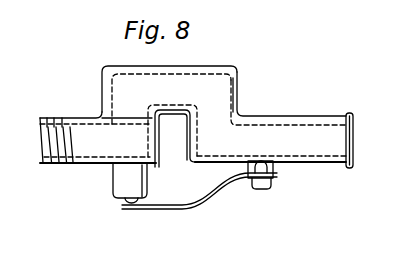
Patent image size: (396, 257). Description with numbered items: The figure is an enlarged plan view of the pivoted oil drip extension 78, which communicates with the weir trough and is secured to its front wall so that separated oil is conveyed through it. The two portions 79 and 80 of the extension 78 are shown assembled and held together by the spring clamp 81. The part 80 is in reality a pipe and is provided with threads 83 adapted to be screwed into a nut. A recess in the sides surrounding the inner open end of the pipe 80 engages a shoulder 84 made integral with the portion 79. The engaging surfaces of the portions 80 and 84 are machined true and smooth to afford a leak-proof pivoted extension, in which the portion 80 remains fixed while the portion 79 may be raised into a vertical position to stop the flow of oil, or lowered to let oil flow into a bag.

The pivoted oil drip extension 78 is at (248, 102).
The movable portion of the extension 79 is at (222, 82).
The fixed portion (pipe) of the extension 80 is at (80, 123).
The spring clamp 81 is at (182, 209).
The threads 83 is at (44, 167).
The shoulder 84 is at (133, 117).